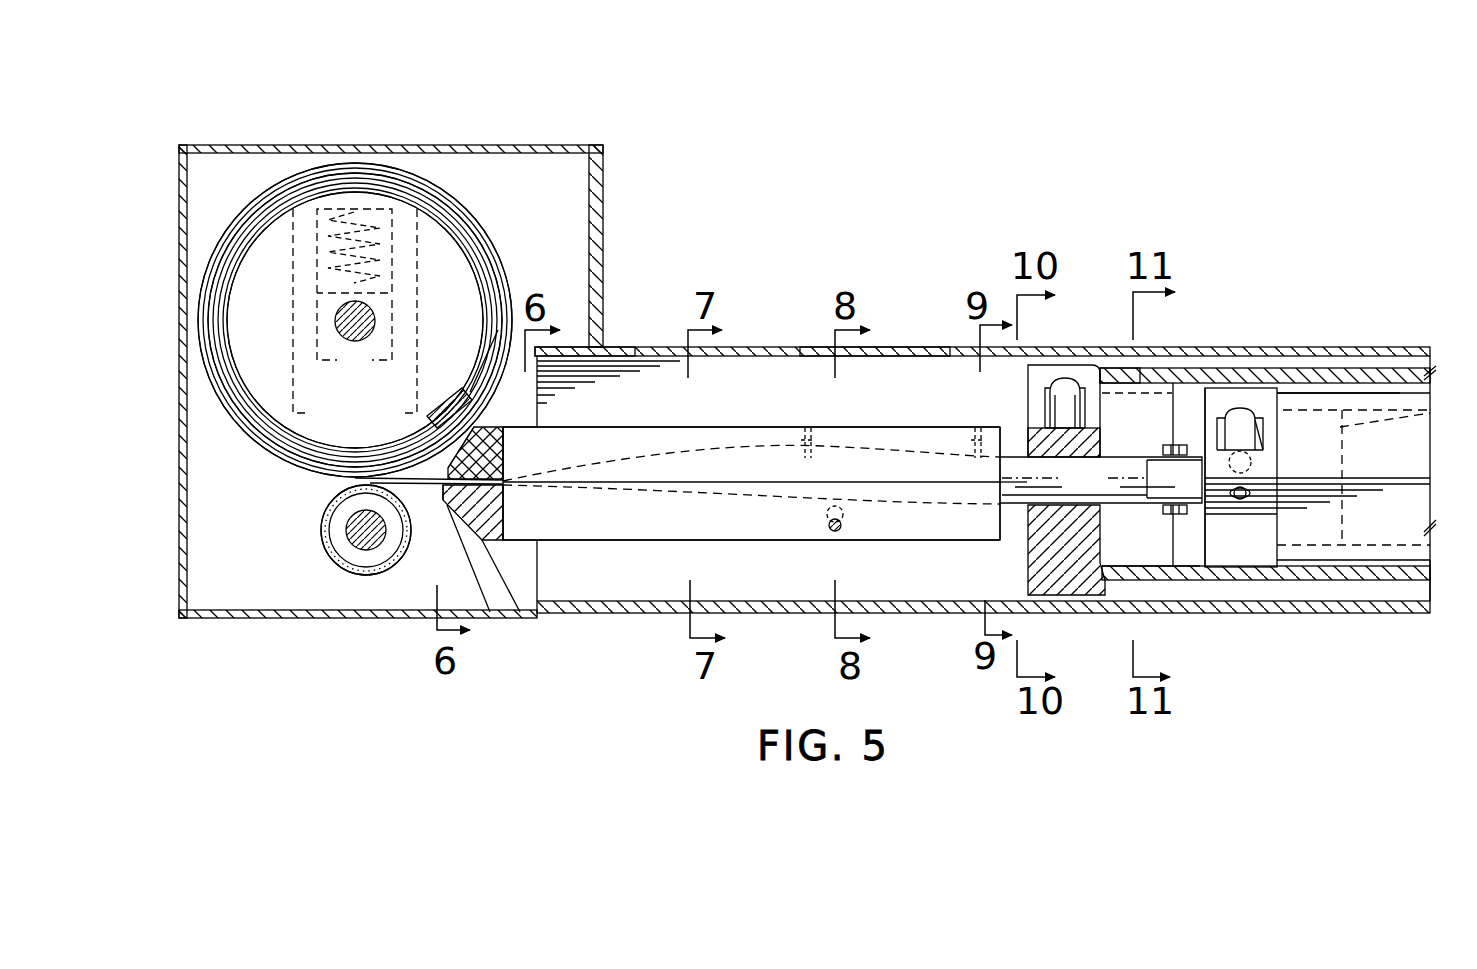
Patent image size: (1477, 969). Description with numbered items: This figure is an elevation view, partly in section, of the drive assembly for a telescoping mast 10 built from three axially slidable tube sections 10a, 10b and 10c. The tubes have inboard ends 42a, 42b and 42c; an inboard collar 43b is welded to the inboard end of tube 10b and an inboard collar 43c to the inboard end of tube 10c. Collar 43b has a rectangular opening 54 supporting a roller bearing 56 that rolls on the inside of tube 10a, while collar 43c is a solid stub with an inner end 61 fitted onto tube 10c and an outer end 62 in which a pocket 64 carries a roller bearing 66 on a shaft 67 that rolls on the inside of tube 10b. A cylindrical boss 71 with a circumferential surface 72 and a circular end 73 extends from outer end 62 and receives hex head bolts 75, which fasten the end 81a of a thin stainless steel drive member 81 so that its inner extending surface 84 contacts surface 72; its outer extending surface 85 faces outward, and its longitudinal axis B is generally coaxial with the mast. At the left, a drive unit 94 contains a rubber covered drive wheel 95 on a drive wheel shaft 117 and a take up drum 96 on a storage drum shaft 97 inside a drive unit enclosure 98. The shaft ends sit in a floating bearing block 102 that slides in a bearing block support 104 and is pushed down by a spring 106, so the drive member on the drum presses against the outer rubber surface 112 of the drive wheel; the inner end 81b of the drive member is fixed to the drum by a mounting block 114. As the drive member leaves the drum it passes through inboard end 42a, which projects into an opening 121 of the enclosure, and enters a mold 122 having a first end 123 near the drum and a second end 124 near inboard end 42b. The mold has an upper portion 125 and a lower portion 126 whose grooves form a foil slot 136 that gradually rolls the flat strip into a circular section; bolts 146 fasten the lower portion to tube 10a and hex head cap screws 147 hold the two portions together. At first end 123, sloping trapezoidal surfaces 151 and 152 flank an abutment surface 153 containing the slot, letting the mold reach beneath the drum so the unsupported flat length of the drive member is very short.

The mast 10 is at (1412, 652).
The tube 10a is at (873, 353).
The tube 10b is at (1117, 372).
The tube 10c is at (1305, 400).
The inboard end 42a is at (612, 352).
The inboard end 42b is at (1137, 378).
The inboard end 42c is at (1352, 375).
The inboard collar 43b is at (1043, 372).
The inboard collar 43c is at (1232, 400).
The rectangular opening 54 is at (1045, 420).
The roller bearing 56 is at (1065, 385).
The inner end 61 is at (1432, 413).
The outer end 62 is at (1205, 388).
The pocket 64 is at (1263, 440).
The roller bearing 66 is at (1243, 415).
The shaft 67 is at (1248, 497).
The cylindrical boss 71 is at (1190, 582).
The circumferential surface 72 is at (1195, 580).
The circular end 73 is at (1101, 480).
The hex head bolt 75 is at (1146, 426).
The drive member 81 is at (235, 432).
The end 81a is at (1207, 507).
The inner end 81b is at (498, 330).
The inner extending surface 84 is at (503, 460).
The outer extending surface 85 is at (505, 487).
The drive unit 94 is at (233, 130).
The drive wheel 95 is at (343, 573).
The take up drum 96 is at (437, 240).
The storage drum shaft 97 is at (345, 326).
The drive unit enclosure 98 is at (394, 160).
The floating bearing block 102 is at (315, 302).
The bearing block support 104 is at (295, 185).
The spring 106 is at (337, 200).
The outer rubber surface 112 is at (325, 557).
The mounting block 114 is at (441, 351).
The drive wheel shaft 117 is at (368, 548).
The opening 121 is at (600, 350).
The mold 122 is at (590, 545).
The first end 123 is at (468, 592).
The second end 124 is at (1000, 540).
The upper portion 125 is at (690, 427).
The lower portion 126 is at (738, 541).
The foil slot 136 is at (592, 391).
The bolt 146 is at (840, 531).
The hex head cap screw 147 is at (805, 426).
The sloping trapezoidal surface 151 is at (522, 606).
The sloping trapezoidal surface 152 is at (448, 448).
The abutment surface 153 is at (460, 482).
The longitudinal axis B is at (1027, 482).